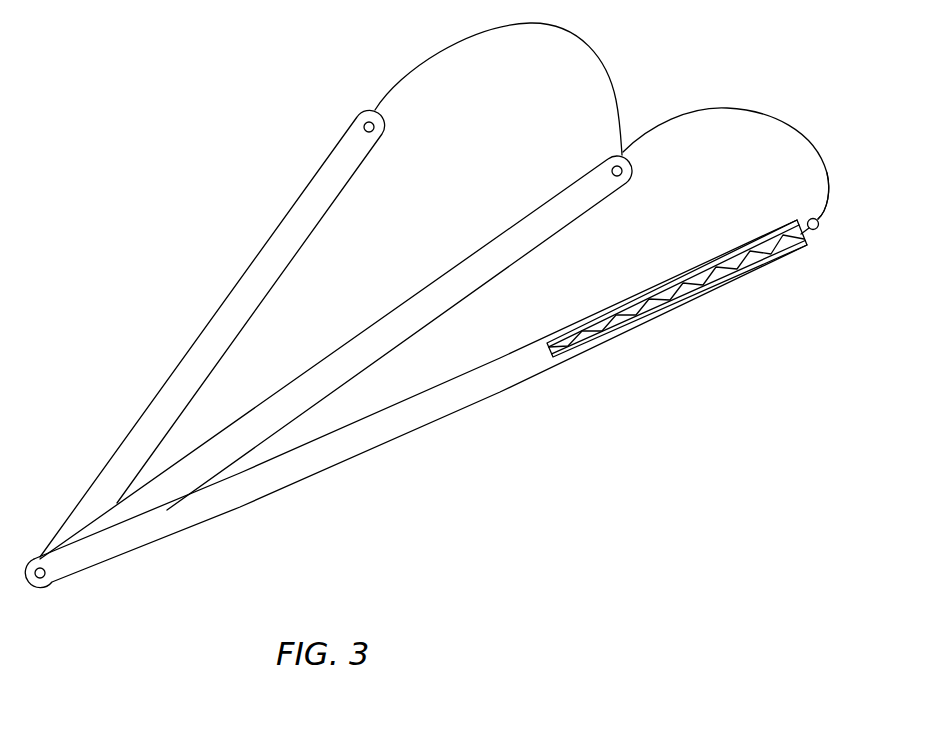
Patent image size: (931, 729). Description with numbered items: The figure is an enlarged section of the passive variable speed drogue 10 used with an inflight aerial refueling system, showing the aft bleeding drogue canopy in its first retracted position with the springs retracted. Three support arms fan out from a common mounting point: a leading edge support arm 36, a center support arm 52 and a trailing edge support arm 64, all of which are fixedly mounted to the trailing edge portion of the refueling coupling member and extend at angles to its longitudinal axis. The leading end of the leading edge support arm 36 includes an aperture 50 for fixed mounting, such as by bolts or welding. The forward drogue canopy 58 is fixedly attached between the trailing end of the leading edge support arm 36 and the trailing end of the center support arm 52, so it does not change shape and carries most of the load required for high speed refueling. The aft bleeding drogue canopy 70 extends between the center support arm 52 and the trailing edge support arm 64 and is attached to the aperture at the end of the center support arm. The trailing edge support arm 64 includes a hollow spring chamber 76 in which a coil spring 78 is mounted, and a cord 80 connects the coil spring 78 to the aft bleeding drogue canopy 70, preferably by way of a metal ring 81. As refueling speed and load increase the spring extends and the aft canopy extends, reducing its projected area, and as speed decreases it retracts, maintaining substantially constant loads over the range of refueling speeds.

The passive variable speed drogue 10 is at (163, 282).
The leading edge support arm 36 is at (260, 255).
The aperture 50 is at (47, 580).
The center support arm 52 is at (408, 302).
The forward drogue canopy 58 is at (553, 23).
The trailing edge support arm 64 is at (435, 422).
The aft bleeding drogue canopy 70 is at (737, 110).
The hollow spring chamber 76 is at (656, 307).
The coil spring 78 is at (702, 289).
The cord 80 is at (817, 232).
The metal ring 81 is at (813, 217).